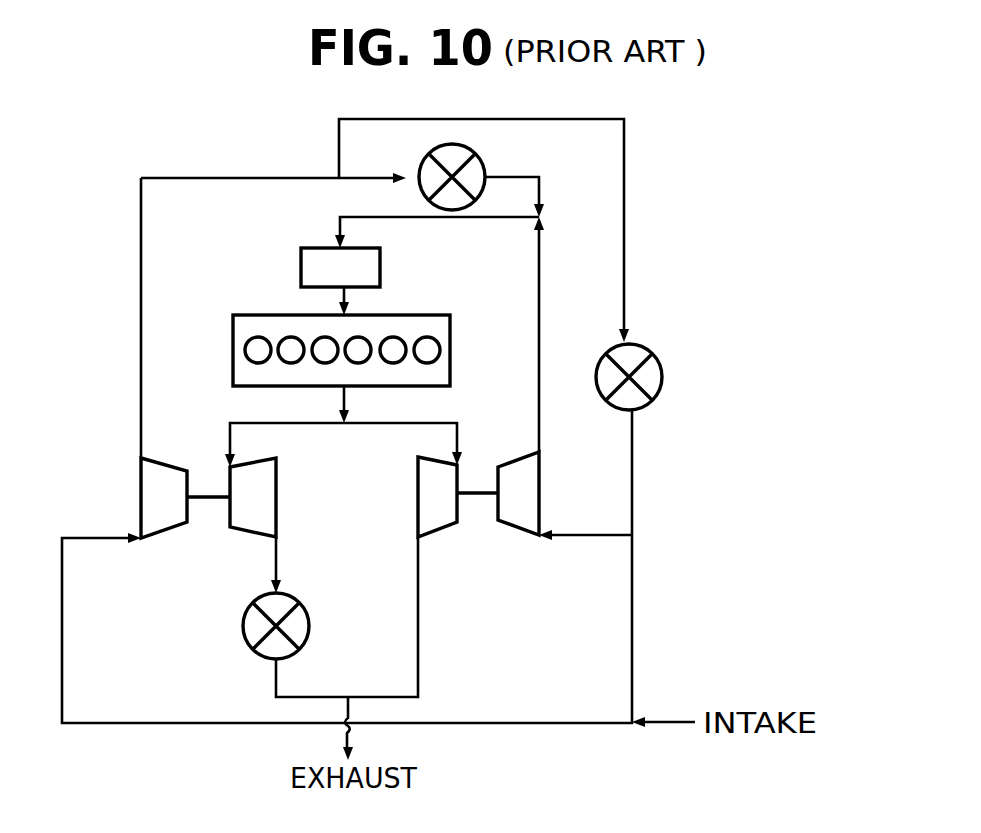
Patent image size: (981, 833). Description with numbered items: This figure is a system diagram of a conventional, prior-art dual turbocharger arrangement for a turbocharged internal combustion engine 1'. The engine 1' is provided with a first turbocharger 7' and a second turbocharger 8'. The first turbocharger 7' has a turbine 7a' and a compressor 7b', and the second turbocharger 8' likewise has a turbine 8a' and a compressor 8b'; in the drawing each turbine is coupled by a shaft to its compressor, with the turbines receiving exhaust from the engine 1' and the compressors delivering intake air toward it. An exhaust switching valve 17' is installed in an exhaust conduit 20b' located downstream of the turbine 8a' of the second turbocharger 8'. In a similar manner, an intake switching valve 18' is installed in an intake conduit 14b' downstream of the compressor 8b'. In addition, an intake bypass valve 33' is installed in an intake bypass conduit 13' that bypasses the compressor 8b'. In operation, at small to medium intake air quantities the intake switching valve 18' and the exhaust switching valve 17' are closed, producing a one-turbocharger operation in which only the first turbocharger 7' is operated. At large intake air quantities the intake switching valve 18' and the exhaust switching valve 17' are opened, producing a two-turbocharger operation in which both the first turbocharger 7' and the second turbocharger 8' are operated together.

The internal combustion engine 1' is at (368, 350).
The intake switching valve 18' is at (481, 165).
The intake bypass conduit 13' is at (517, 230).
The intake bypass valve 33' is at (646, 350).
The intake conduit 14b' is at (182, 318).
The second turbocharger 8' is at (206, 474).
The turbine 8a' is at (285, 497).
The compressor 8b' is at (129, 490).
The first turbocharger 7' is at (479, 472).
The turbine 7a' is at (402, 497).
The compressor 7b' is at (554, 487).
The exhaust switching valve 17' is at (240, 598).
The exhaust conduit 20b' is at (311, 622).